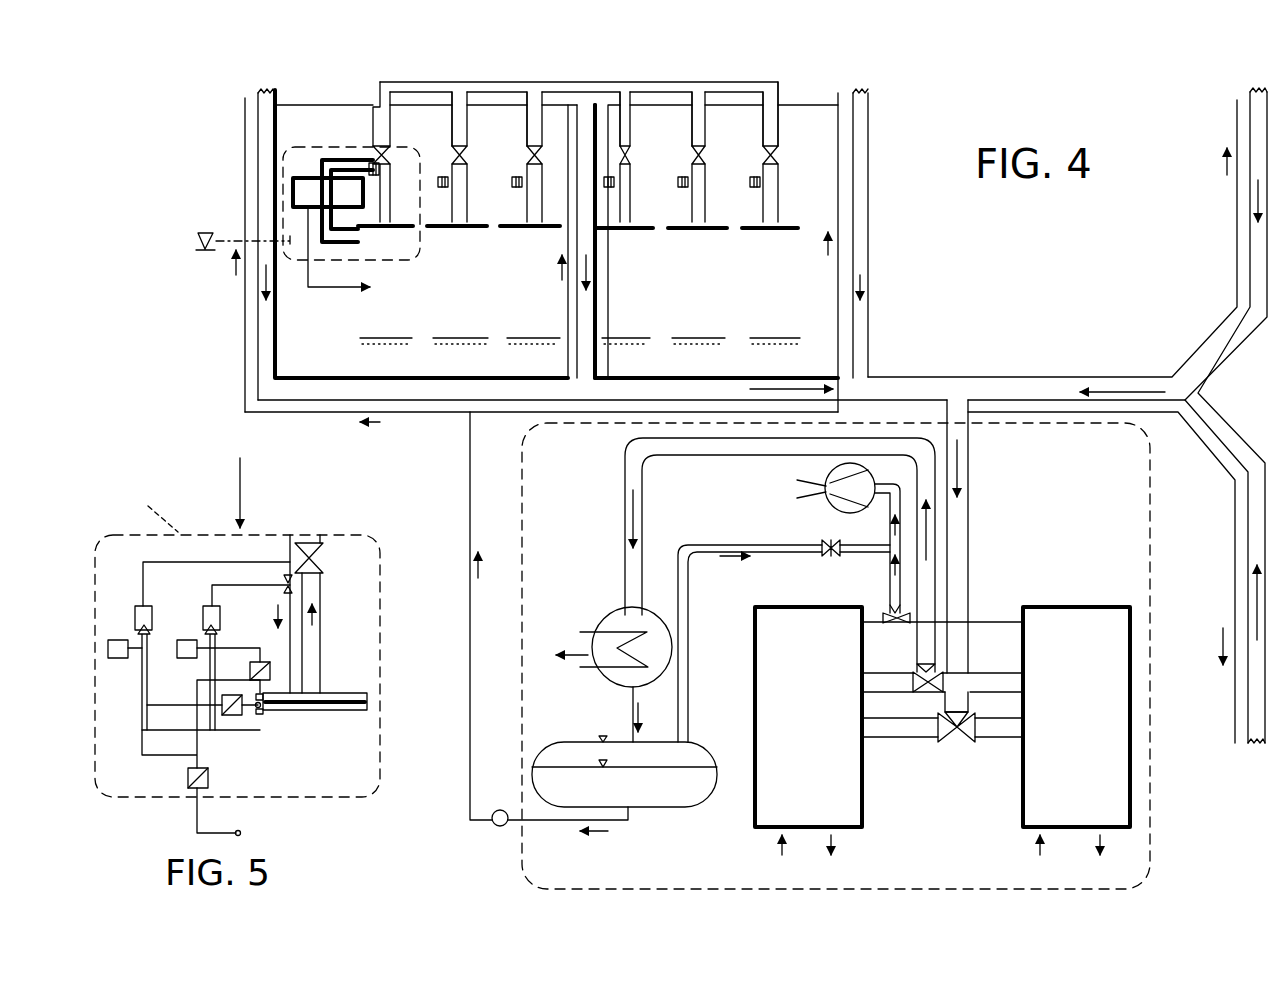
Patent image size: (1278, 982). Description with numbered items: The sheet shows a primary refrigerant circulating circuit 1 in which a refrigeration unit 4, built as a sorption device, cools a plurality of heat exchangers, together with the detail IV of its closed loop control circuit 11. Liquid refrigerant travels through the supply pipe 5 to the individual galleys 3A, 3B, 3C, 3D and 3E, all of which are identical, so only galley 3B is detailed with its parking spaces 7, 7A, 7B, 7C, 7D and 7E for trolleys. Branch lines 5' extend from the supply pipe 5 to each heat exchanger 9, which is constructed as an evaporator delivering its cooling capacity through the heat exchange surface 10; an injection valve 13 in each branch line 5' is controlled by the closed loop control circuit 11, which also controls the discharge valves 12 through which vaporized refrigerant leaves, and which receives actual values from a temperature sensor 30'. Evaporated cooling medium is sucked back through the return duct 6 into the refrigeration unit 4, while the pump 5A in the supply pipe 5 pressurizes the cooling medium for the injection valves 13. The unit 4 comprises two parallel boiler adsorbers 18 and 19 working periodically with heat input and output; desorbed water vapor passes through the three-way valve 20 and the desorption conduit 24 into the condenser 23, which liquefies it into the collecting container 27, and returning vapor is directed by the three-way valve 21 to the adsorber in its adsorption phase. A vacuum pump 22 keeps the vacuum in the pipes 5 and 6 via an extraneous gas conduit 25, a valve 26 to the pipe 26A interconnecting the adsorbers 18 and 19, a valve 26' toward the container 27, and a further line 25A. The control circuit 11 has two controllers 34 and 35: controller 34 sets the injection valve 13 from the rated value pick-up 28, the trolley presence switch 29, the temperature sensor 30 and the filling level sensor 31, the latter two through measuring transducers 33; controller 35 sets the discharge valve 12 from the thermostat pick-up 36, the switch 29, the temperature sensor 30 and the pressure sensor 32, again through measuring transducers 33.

In FIG. 4, the circulating system 1 is at (203, 102).
In FIG. 4, the galley 3A is at (415, 232).
In FIG. 4, the galley 3B is at (705, 231).
In FIG. 4, the galley 3C is at (857, 216).
In FIG. 4, the galley 3D is at (1073, 401).
In FIG. 4, the galley 3E is at (1122, 590).
In FIG. 4, the refrigeration unit 4 is at (1152, 805).
In FIG. 4, the supply pipe 5 is at (710, 535).
In FIG. 4, the pump 5A is at (500, 826).
In FIG. 4, the branch line 5' is at (553, 124).
In FIG. 4, the return duct 6 is at (585, 312).
In FIG. 4, the parking space 7 is at (385, 345).
In FIG. 4, the parking space 7A is at (460, 338).
In FIG. 4, the parking space 7B is at (533, 338).
In FIG. 4, the parking space 7C is at (625, 338).
In FIG. 4, the parking space 7D is at (698, 338).
In FIG. 4, the parking space 7E is at (775, 338).
In FIG. 4, the heat exchanger 9 is at (387, 232).
In FIG. 5, the heat exchanger 9 is at (355, 712).
In FIG. 4, the heat exchange surface 10 is at (375, 243).
In FIG. 4, the closed loop control circuit 11 is at (300, 193).
In FIG. 5, the closed loop control circuit 11 is at (247, 477).
In FIG. 4, the discharge valve 12 is at (462, 146).
In FIG. 5, the discharge valve 12 is at (323, 553).
In FIG. 4, the injection valve 13 is at (369, 165).
In FIG. 5, the injection valve 13 is at (292, 587).
In FIG. 4, the boiler adsorber 18 is at (862, 805).
In FIG. 4, the boiler adsorber 19 is at (1023, 805).
In FIG. 4, the three-way valve 20 is at (926, 670).
In FIG. 4, the three-way valve 21 is at (968, 740).
In FIG. 4, the vacuum pump 22 is at (832, 505).
In FIG. 4, the condenser 23 is at (612, 626).
In FIG. 4, the desorption conduit 24 is at (626, 472).
In FIG. 4, the extraneous gas conduit 25 is at (902, 583).
In FIG. 4, the pipe 25A is at (688, 582).
In FIG. 4, the valve 26 is at (951, 595).
In FIG. 4, the pipe 26A is at (1000, 621).
In FIG. 4, the valve 26' is at (811, 562).
In FIG. 4, the collecting container 27 is at (566, 742).
In FIG. 5, the rated value input pick-up 28 is at (186, 652).
In FIG. 5, the switch 29 is at (262, 713).
In FIG. 5, the temperature sensor 30 is at (257, 818).
In FIG. 4, the temperature sensor 30' is at (321, 260).
In FIG. 5, the filling level sensor 31 is at (262, 695).
In FIG. 5, the pressure sensor 32 is at (262, 708).
In FIG. 5, the measuring transducer 33 is at (188, 778).
In FIG. 5, the controller 34 is at (200, 600).
In FIG. 5, the controller 35 is at (135, 605).
In FIG. 5, the rated value pick-up 36 is at (118, 655).
In FIG. 5, the detail reference IV is at (167, 503).